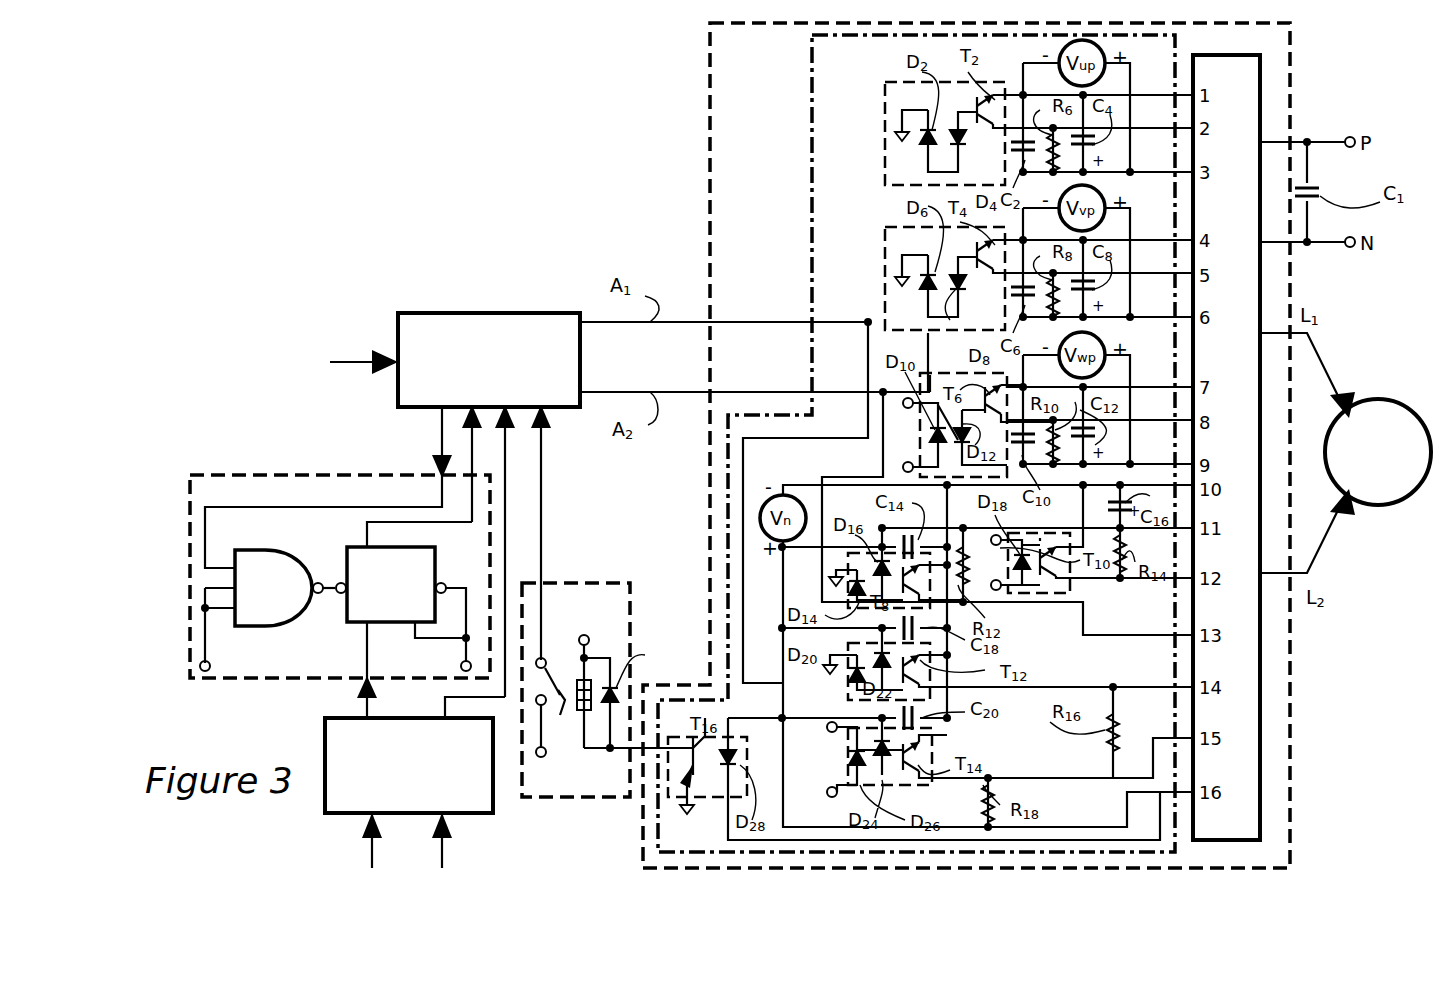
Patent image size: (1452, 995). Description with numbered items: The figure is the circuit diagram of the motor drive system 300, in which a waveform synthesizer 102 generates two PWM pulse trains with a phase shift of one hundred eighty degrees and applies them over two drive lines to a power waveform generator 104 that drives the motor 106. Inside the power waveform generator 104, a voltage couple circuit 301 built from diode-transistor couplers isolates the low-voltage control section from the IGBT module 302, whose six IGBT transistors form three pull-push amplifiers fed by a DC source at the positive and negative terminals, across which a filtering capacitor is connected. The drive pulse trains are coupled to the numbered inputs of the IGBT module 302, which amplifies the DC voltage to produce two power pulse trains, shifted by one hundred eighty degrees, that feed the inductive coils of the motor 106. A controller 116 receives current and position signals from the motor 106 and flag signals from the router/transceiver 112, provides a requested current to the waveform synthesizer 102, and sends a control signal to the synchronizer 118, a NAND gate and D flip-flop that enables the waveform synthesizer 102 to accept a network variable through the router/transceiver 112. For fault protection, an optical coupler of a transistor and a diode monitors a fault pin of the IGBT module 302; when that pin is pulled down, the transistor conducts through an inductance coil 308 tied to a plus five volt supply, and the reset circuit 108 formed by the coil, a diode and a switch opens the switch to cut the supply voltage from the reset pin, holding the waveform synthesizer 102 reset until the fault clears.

The motor drive system 300 is at (264, 166).
The power waveform generator 104 is at (710, 133).
The voltage couple circuit 301 is at (812, 262).
The IGBT module 302 is at (1288, 716).
The waveform synthesizer 102 is at (489, 360).
The router/transceiver 112 is at (305, 362).
The synchronizer 118 is at (268, 472).
The controller 116 is at (409, 793).
The motor 106 is at (865, 644).
The reset circuit 108 is at (608, 583).
The inductance coil 308 is at (593, 690).